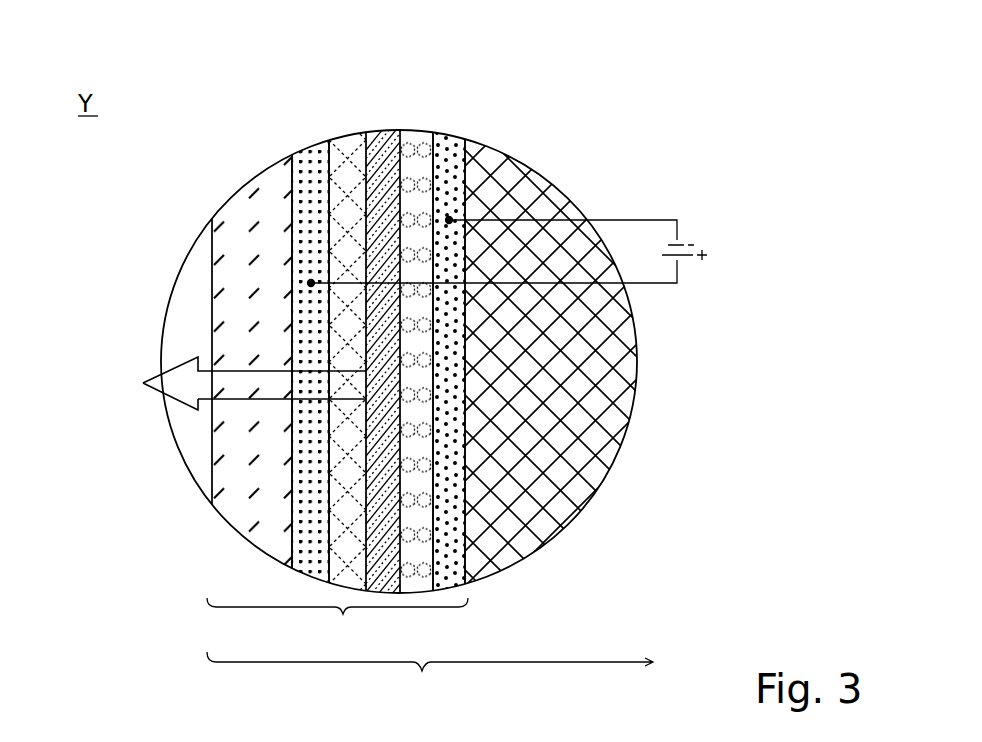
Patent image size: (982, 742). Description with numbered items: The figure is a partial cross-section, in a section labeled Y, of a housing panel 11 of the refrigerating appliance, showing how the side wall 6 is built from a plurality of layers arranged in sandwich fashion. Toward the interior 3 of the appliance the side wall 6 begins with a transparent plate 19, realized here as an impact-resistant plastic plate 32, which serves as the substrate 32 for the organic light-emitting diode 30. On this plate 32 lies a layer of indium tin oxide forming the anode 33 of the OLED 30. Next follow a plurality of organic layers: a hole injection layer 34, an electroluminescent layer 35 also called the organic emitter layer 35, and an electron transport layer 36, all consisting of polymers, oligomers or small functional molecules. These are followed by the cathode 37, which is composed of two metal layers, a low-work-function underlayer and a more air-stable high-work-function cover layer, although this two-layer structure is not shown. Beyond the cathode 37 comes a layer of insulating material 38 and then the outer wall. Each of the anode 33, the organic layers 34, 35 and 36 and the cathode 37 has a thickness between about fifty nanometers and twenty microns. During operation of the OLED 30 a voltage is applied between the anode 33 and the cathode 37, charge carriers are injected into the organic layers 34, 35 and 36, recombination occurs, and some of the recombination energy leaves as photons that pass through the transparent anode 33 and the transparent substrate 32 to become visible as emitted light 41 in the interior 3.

The interior 3 is at (192, 288).
The emitted light 41 is at (188, 378).
The impact-resistant plastic plate 32 is at (252, 346).
The transparent plate 19 is at (278, 185).
The anode 33 is at (313, 177).
The hole injection layer 34 is at (350, 157).
The electroluminescent layer 35 is at (385, 160).
The electron transport layer 36 is at (418, 143).
The cathode 37 is at (448, 150).
The insulating material 38 is at (533, 187).
The side wall 6 is at (337, 623).
The organic light-emitting diode 30 is at (337, 623).
The housing panel 11 is at (430, 676).